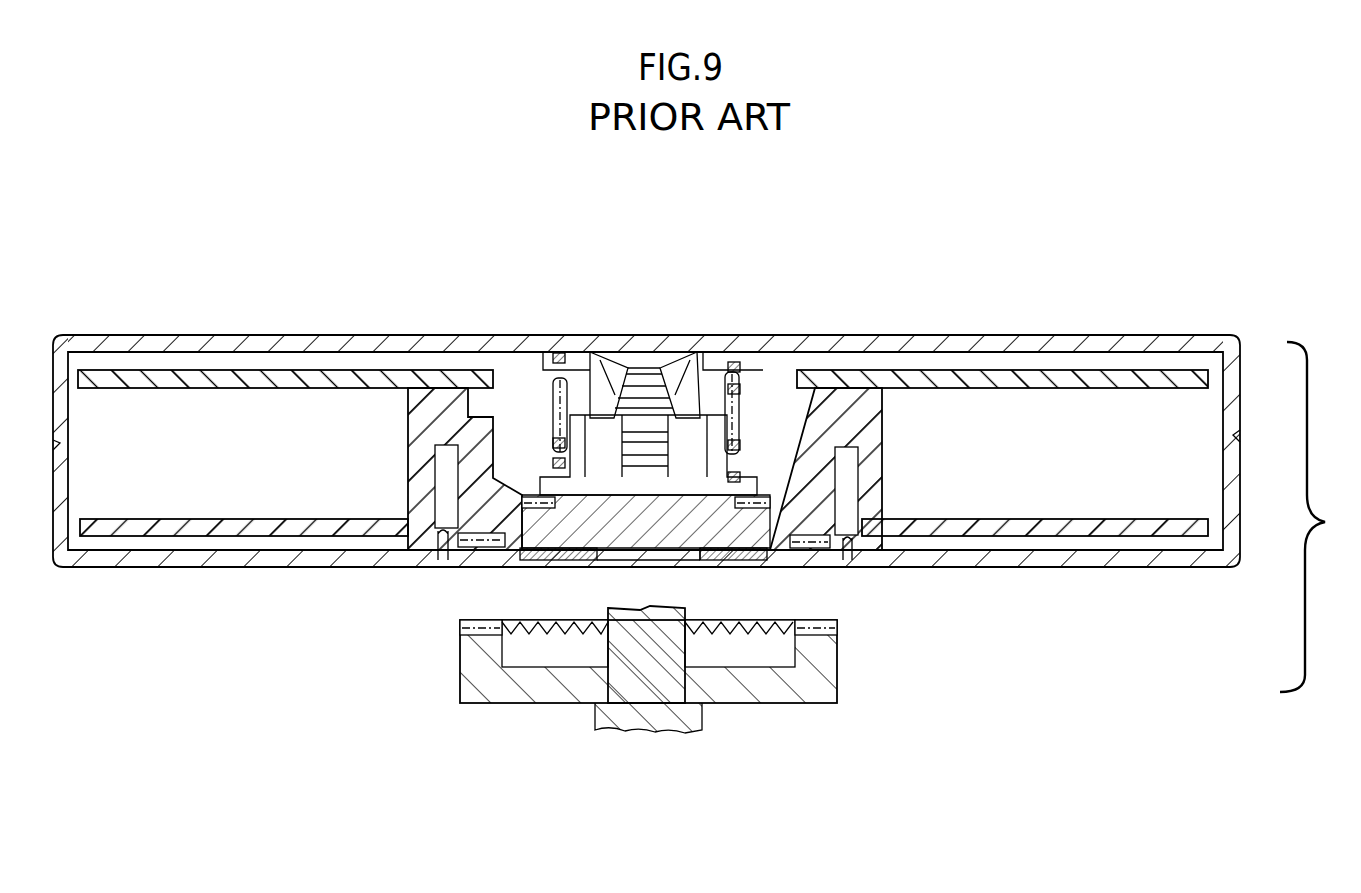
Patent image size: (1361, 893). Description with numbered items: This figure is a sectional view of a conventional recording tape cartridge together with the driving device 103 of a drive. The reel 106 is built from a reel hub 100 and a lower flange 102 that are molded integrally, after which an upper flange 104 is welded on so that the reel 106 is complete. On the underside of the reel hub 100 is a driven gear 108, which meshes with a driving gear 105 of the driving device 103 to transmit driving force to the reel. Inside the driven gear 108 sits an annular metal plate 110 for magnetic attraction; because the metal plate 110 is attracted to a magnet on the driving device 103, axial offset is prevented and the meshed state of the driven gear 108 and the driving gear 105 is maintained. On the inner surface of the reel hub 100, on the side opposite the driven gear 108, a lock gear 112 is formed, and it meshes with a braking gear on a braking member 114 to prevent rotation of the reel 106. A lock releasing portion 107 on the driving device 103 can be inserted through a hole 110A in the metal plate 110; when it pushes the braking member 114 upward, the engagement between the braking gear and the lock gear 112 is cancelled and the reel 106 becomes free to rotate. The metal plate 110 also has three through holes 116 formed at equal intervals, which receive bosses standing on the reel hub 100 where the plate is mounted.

The reel hub 100 is at (873, 464).
The lower flange 102 is at (1025, 522).
The driving device 103 is at (873, 690).
The upper flange 104 is at (962, 383).
The driving gear 105 is at (838, 632).
The reel 106 is at (1058, 368).
The lock releasing portion 107 is at (645, 618).
The driven gear 108 is at (812, 563).
The annular metal plate 110 is at (760, 565).
The hole 110A is at (607, 565).
The lock gear 112 is at (757, 495).
The braking member 114 is at (772, 468).
The through holes 116 is at (728, 565).